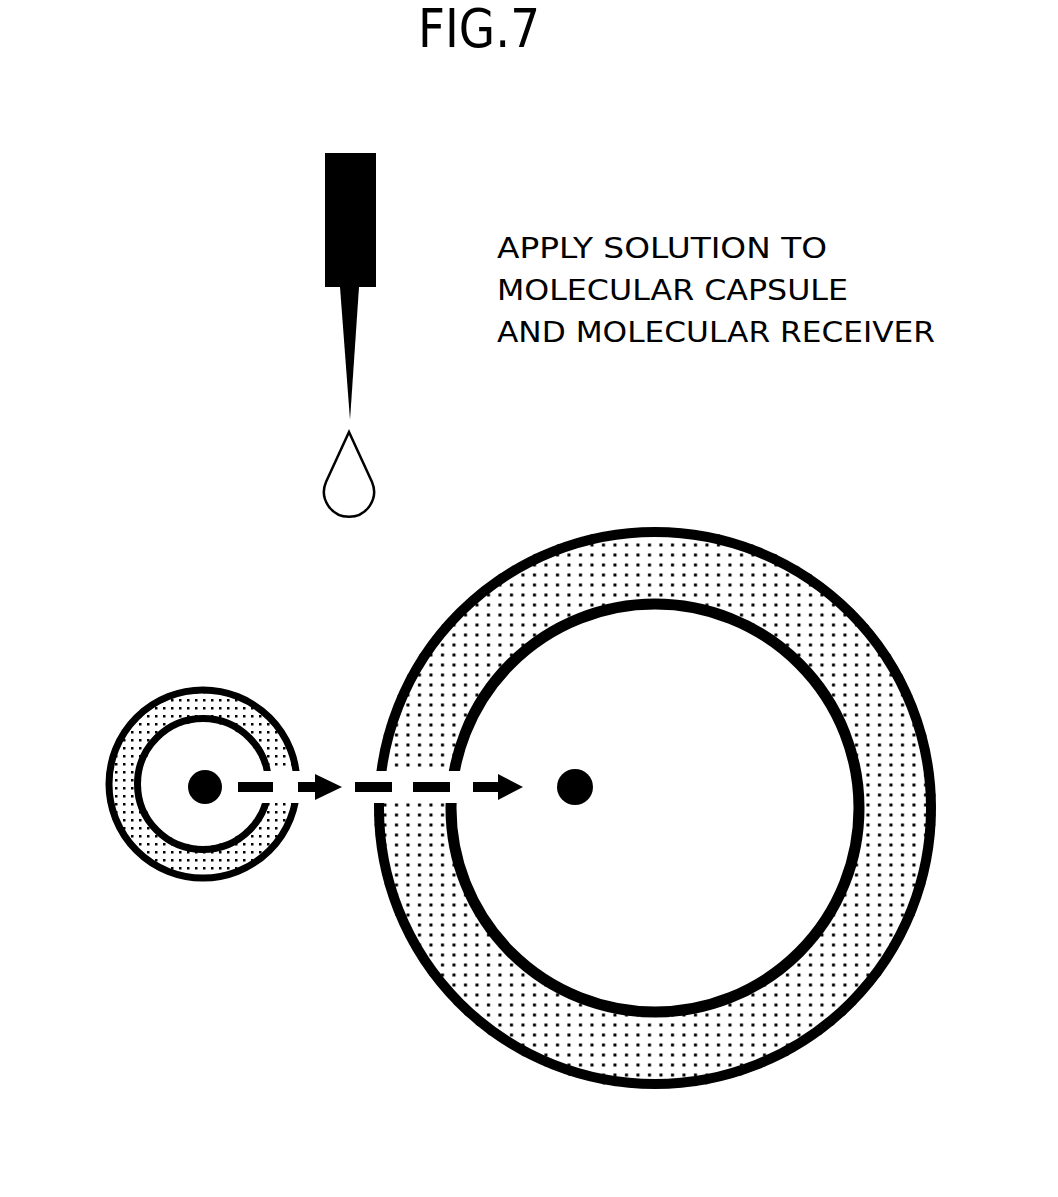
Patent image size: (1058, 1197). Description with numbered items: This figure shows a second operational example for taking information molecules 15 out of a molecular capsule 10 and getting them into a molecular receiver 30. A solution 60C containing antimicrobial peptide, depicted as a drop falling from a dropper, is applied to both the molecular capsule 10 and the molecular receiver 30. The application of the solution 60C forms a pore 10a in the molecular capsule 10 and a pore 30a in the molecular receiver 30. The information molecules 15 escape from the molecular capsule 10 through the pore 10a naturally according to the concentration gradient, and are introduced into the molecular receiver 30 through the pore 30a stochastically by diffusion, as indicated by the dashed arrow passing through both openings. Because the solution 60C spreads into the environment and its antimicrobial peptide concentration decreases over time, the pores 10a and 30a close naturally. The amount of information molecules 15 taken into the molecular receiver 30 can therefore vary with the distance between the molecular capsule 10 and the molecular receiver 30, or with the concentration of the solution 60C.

The molecular capsule 10 is at (157, 700).
The pore 10a is at (307, 795).
The information molecules 15 is at (212, 800).
The molecular receiver 30 is at (776, 562).
The pore 30a is at (363, 777).
The solution containing antimicrobial peptide 60C is at (360, 488).